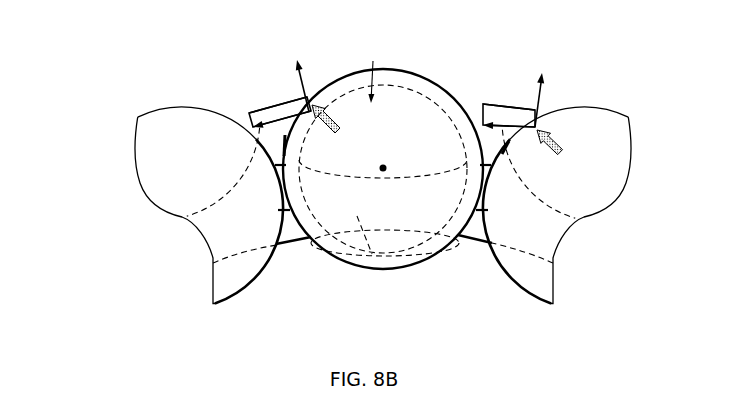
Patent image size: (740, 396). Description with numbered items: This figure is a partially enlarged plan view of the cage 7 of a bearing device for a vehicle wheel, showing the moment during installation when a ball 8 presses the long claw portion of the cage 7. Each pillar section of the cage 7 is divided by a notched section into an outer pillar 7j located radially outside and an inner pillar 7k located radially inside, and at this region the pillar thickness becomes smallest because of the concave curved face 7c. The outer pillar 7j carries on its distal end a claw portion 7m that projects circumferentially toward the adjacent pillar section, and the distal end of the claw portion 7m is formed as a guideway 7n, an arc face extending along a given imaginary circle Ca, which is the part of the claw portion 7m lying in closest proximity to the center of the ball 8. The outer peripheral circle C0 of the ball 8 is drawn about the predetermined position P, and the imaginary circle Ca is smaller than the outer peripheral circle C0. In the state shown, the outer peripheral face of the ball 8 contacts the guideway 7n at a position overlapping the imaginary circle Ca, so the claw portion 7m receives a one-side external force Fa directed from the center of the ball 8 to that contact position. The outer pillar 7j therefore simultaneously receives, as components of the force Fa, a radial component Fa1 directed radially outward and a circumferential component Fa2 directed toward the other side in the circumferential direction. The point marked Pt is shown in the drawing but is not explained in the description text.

The cage 7 is at (88, 27).
The ball 8 is at (137, 116).
The outer pillar 7j is at (281, 107).
The claw portion 7m is at (308, 96).
The guideway 7n is at (324, 106).
The inner pillar 7k is at (293, 244).
The concave curved face 7c is at (246, 250).
The one-side external force Fa is at (339, 130).
The radial component Fa1 is at (296, 55).
The circumferential component Fa2 is at (250, 111).
The contact point Pt is at (373, 71).
The predetermined position P is at (385, 172).
The outer peripheral circle C0 is at (331, 255).
The imaginary circle Ca is at (428, 248).